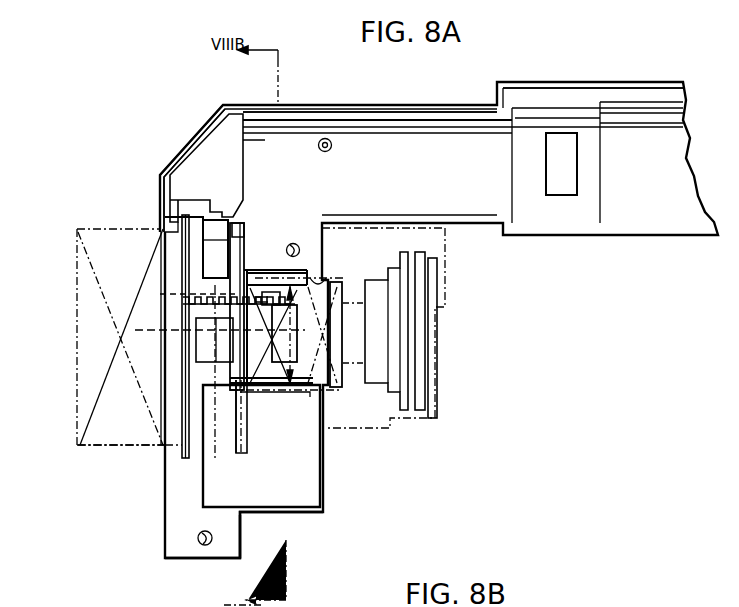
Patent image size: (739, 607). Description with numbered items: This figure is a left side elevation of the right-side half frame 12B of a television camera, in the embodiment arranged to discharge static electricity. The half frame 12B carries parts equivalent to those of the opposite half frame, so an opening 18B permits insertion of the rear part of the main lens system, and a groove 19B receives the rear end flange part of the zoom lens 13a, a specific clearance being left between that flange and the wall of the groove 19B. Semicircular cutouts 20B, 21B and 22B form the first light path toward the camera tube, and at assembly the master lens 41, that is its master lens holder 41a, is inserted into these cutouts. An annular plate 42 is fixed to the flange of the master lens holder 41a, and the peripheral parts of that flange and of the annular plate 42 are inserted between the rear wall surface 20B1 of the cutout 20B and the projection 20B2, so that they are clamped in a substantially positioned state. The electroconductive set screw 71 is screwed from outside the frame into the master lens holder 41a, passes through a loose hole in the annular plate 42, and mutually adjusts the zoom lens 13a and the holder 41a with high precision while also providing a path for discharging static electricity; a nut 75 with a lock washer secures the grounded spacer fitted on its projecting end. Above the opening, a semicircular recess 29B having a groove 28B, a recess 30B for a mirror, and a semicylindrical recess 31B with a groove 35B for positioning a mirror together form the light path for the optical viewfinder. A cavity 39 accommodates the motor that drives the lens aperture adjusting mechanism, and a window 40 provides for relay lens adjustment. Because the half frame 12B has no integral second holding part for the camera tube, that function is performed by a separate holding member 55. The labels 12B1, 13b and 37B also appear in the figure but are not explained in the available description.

The right-side half frame 12B is at (571, 67).
The frame foot portion 12B1 is at (165, 526).
The semicylindrical recess 31B is at (427, 110).
The window 40 is at (562, 195).
The recess for a mirror 30B is at (205, 152).
The groove for positioning a mirror 35B is at (222, 104).
The groove 28B is at (213, 200).
The semicircular cutout 20B is at (175, 236).
The rear wall surface 20B1 is at (235, 220).
The projection 20B2 is at (213, 350).
The semicircular cutout 29B is at (195, 262).
The semicircular recess 21B is at (260, 270).
The groove 19B is at (186, 462).
The opening 18B is at (165, 440).
The zoom lens 13a is at (152, 392).
The pivot pin 13b is at (241, 417).
The set screw 71 is at (160, 294).
The nut 75 is at (135, 330).
The ball bearing 37B is at (298, 246).
The semicircular recess 22B is at (332, 282).
The master lens 41 is at (266, 398).
The master lens holder 41a is at (250, 437).
The annular plate 42 is at (233, 432).
The cavity 39 is at (300, 510).
The holding member 55 is at (445, 292).